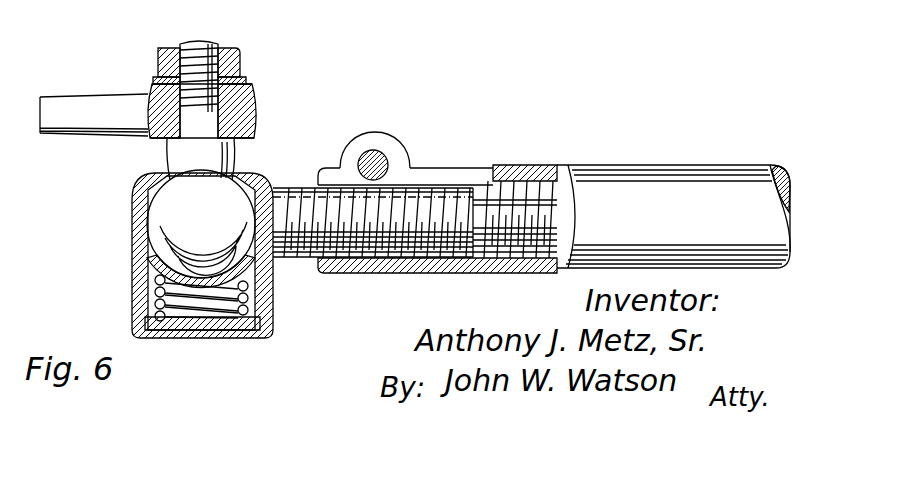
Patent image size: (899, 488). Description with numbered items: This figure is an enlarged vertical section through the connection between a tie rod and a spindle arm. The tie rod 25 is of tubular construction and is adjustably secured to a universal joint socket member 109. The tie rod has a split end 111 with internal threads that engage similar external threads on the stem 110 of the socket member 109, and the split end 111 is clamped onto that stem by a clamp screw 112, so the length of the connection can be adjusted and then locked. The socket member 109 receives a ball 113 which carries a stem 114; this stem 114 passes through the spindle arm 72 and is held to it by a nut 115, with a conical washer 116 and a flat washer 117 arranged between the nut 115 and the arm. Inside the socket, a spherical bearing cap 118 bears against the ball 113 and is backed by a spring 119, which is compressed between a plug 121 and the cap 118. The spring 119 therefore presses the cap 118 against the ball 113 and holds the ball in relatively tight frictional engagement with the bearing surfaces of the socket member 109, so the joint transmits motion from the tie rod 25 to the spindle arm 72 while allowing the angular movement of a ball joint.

The tie rod 25 is at (593, 168).
The spindle arm 72 is at (64, 100).
The universal joint socket member 109 is at (275, 300).
The stem of socket member 110 is at (287, 190).
The split end 111 is at (400, 154).
The clamp screw 112 is at (374, 158).
The ball 113 is at (175, 213).
The stem 114 is at (203, 42).
The nut 115 is at (241, 55).
The conical washer 116 is at (170, 158).
The flat washer 117 is at (248, 80).
The spherical bearing cap 118 is at (152, 264).
The spring 119 is at (152, 305).
The plug 121 is at (233, 330).